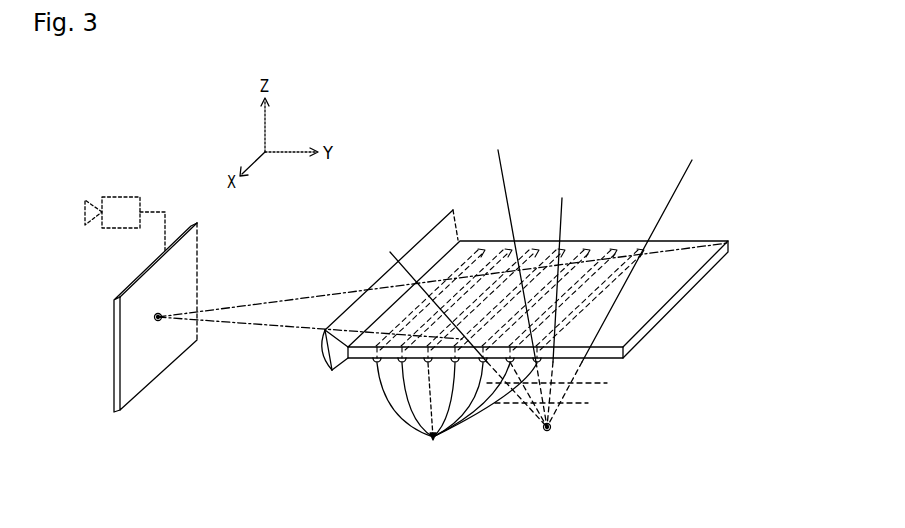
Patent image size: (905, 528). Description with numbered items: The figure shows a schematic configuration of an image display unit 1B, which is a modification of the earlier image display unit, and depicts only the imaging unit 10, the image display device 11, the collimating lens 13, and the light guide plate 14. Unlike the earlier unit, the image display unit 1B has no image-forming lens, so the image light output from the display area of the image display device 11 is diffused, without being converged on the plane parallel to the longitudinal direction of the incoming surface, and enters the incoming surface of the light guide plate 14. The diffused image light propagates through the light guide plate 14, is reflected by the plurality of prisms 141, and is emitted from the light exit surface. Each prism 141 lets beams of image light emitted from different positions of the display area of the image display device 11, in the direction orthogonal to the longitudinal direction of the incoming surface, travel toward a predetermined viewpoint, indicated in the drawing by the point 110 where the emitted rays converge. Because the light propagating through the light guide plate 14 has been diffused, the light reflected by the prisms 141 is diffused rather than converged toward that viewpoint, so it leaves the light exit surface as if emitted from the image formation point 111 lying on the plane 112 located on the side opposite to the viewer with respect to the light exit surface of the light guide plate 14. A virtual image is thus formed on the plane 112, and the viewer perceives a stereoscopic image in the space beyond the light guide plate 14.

The image display unit 1B is at (622, 129).
The imaging unit 10 is at (120, 197).
The image display device 11 is at (197, 237).
The collimating lens 13 is at (323, 374).
The light guide plate 14 is at (657, 328).
The prism 141 is at (457, 415).
The viewpoint 110 is at (546, 431).
The image formation point 111 is at (553, 408).
The plane 112 is at (600, 389).